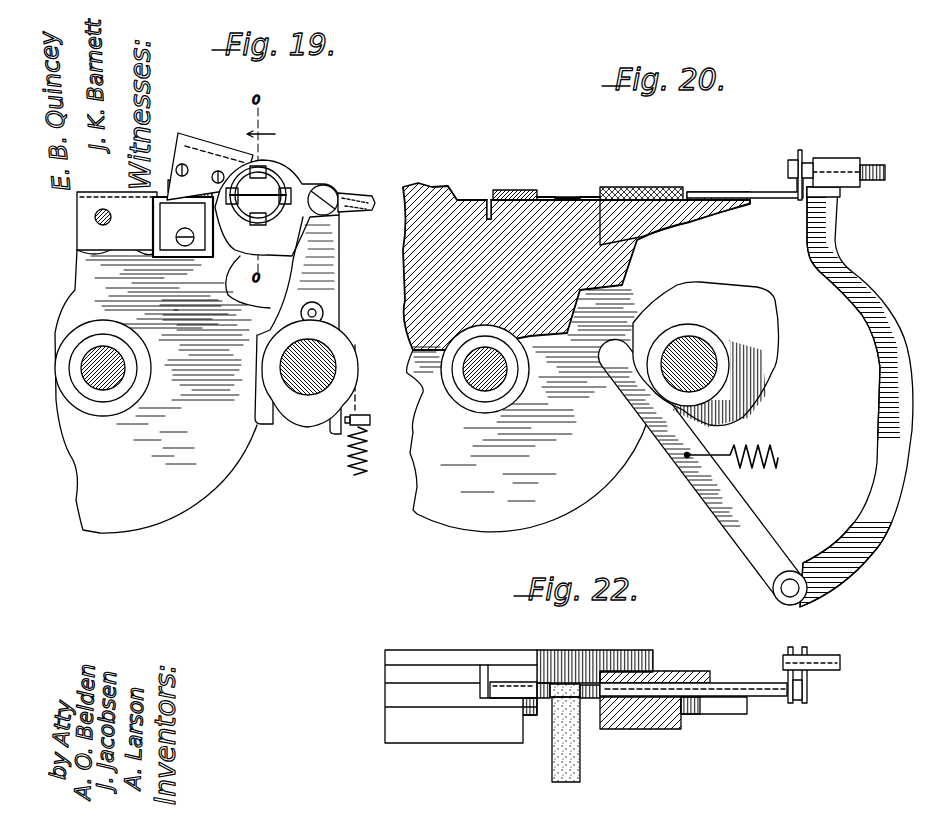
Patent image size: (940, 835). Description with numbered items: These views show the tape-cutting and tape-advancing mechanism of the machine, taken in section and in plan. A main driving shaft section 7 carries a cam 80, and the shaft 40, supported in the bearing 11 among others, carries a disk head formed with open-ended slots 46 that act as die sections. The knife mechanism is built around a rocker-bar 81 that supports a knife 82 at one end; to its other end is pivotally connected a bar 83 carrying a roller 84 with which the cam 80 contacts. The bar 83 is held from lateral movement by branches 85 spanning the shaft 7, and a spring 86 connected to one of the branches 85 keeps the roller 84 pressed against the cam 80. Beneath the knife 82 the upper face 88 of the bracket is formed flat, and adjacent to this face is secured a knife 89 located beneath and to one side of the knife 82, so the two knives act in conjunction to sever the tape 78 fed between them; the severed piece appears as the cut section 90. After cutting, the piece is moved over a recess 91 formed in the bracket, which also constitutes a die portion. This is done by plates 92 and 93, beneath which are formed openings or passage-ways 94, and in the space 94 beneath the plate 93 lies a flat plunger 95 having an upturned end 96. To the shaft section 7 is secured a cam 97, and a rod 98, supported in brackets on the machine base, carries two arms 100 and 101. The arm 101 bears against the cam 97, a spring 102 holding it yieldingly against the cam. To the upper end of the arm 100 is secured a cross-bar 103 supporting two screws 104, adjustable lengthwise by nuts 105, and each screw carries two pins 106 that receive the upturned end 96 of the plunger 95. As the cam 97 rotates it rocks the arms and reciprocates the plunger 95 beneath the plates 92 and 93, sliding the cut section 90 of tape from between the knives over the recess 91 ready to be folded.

In FIG. 19, the shaft section 7 is at (300, 374).
In FIG. 20, the shaft section 7 is at (715, 364).
In FIG. 19, the bearing 11 is at (232, 247).
In FIG. 20, the bearing 11 is at (640, 232).
In FIG. 22, the bearing 11 is at (497, 744).
In FIG. 19, the shaft 40 is at (112, 378).
In FIG. 20, the shaft 40 is at (485, 388).
In FIG. 22, the open-ended slot 46 is at (483, 666).
In FIG. 22, the tape 78 is at (581, 766).
In FIG. 19, the cam 80 is at (318, 430).
In FIG. 19, the rocker-bar 81 is at (276, 170).
In FIG. 19, the knife 82 is at (189, 184).
In FIG. 19, the bar 83 is at (339, 268).
In FIG. 19, the roller 84 is at (324, 313).
In FIG. 19, the branches 85 is at (262, 432).
In FIG. 19, the spring 86 is at (364, 445).
In FIG. 19, the upper face 88 is at (155, 192).
In FIG. 20, the upper face 88 is at (590, 196).
In FIG. 22, the upper face 88 is at (540, 682).
In FIG. 19, the knife 89 is at (184, 252).
In FIG. 22, the knife 89 is at (546, 712).
In FIG. 20, the cut section of tape 90 is at (567, 196).
In FIG. 22, the cut section of tape 90 is at (576, 684).
In FIG. 20, the recess 91 is at (489, 199).
In FIG. 22, the recess 91 is at (481, 700).
In FIG. 19, the plate 92 is at (138, 200).
In FIG. 20, the plate 92 is at (515, 182).
In FIG. 22, the plate 92 is at (513, 690).
In FIG. 20, the plate 93 is at (646, 187).
In FIG. 20, the opening or passage-way 94 is at (543, 196).
In FIG. 22, the opening or passage-way 94 is at (664, 671).
In FIG. 20, the flat plunger 95 is at (743, 192).
In FIG. 22, the flat plunger 95 is at (750, 683).
In FIG. 20, the upturned end 96 is at (800, 150).
In FIG. 22, the upturned end 96 is at (807, 690).
In FIG. 20, the cam 97 is at (768, 290).
In FIG. 20, the rod 98 is at (786, 595).
In FIG. 20, the arm 100 is at (911, 406).
In FIG. 20, the arm 101 is at (716, 535).
In FIG. 20, the spring 102 is at (771, 463).
In FIG. 20, the cross-bar 103 is at (848, 158).
In FIG. 20, the screw 104 is at (882, 170).
In FIG. 22, the screw 104 is at (841, 663).
In FIG. 20, the nut 105 is at (838, 195).
In FIG. 20, the pin 106 is at (790, 166).
In FIG. 22, the pin 106 is at (804, 706).